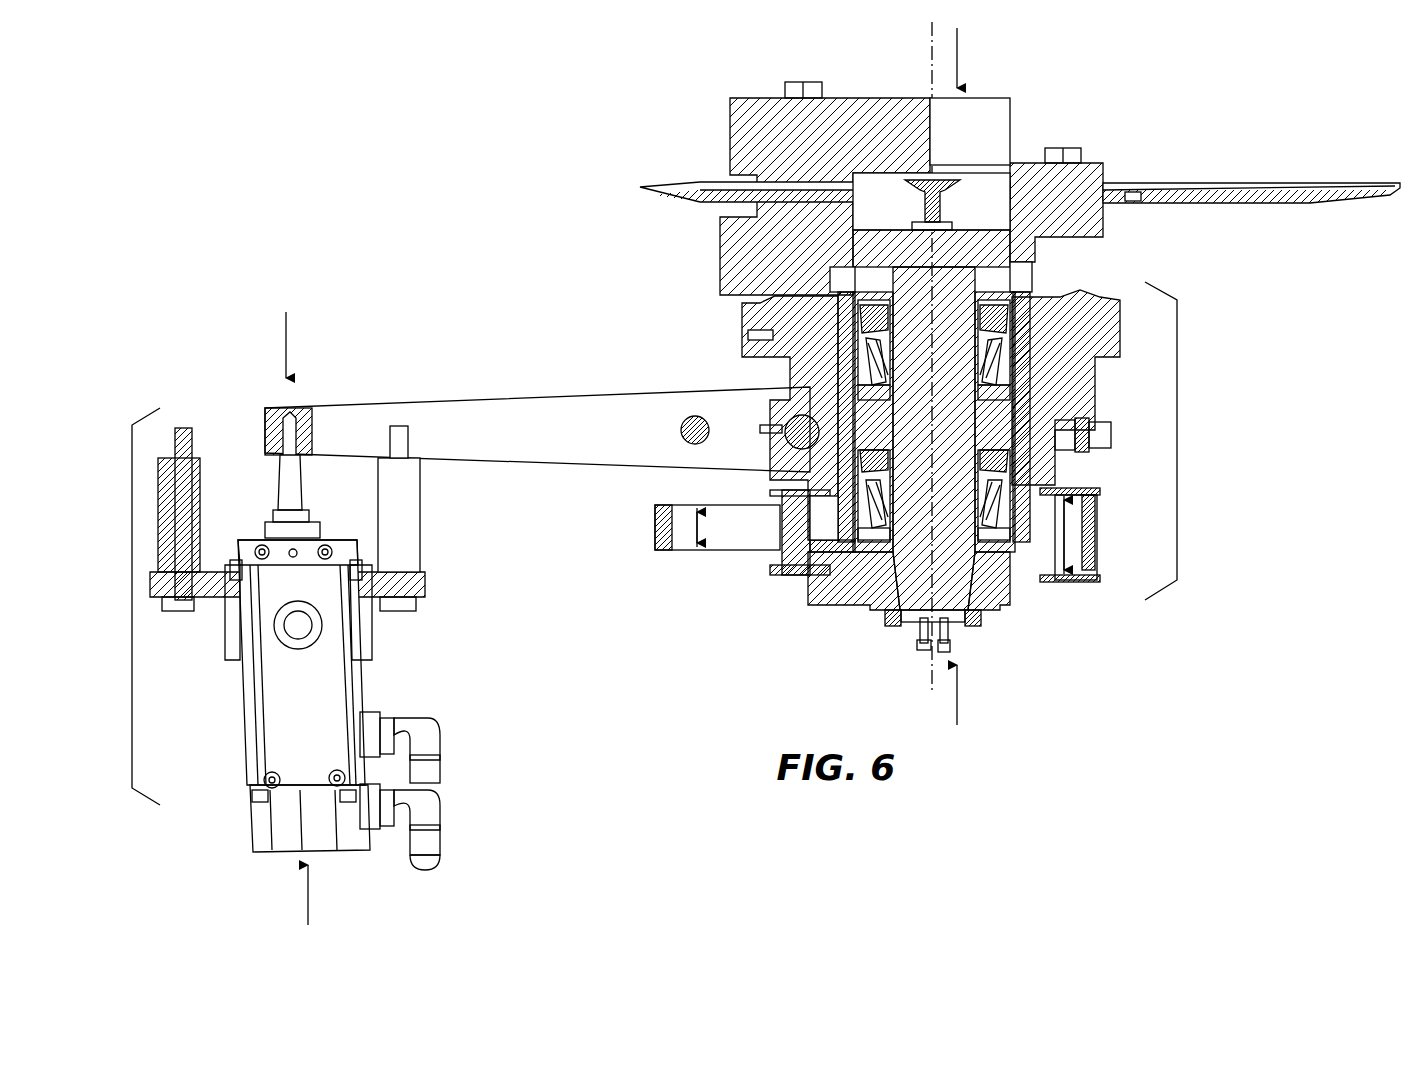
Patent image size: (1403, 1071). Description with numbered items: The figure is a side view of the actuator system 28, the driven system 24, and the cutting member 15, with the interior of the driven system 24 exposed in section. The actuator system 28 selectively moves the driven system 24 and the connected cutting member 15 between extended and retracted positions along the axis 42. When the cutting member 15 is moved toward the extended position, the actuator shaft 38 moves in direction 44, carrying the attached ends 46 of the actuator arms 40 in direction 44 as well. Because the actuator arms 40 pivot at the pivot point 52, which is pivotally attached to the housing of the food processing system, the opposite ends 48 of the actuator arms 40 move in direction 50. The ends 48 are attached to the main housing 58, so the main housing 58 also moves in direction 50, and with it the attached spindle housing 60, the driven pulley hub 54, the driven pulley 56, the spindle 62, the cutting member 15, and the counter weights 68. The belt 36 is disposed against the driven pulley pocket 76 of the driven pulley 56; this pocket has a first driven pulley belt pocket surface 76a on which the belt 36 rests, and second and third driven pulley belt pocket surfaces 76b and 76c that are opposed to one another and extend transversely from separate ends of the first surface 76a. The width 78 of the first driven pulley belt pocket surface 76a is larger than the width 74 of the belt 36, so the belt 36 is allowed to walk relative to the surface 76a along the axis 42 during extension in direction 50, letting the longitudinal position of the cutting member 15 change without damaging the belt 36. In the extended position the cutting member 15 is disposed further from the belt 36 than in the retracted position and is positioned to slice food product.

The cutting member 15 is at (1349, 185).
The driven system 24 is at (1178, 445).
The actuator system 28 is at (132, 578).
The belt 36 is at (720, 540).
The actuator shaft 38 is at (290, 485).
The actuator arms 40 is at (545, 428).
The axis 42 is at (930, 73).
The direction 44 is at (957, 60).
The attached ends 46 is at (312, 418).
The ends 48 is at (815, 500).
The direction 50 is at (958, 695).
The pivot point 52 is at (695, 415).
The driven pulley hub 54 is at (870, 598).
The driven pulley 56 is at (803, 575).
The main housing 58 is at (1088, 312).
The spindle housing 60 is at (1000, 420).
The spindle 62 is at (968, 257).
The counter weights 68 is at (738, 245).
The width 74 is at (690, 530).
The driven pulley pocket 76 is at (1115, 493).
The first driven pulley belt pocket surface 76a is at (1092, 543).
The second driven pulley belt pocket surface 76b is at (1090, 495).
The third driven pulley belt pocket surface 76c is at (1096, 583).
The width 78 is at (1055, 550).